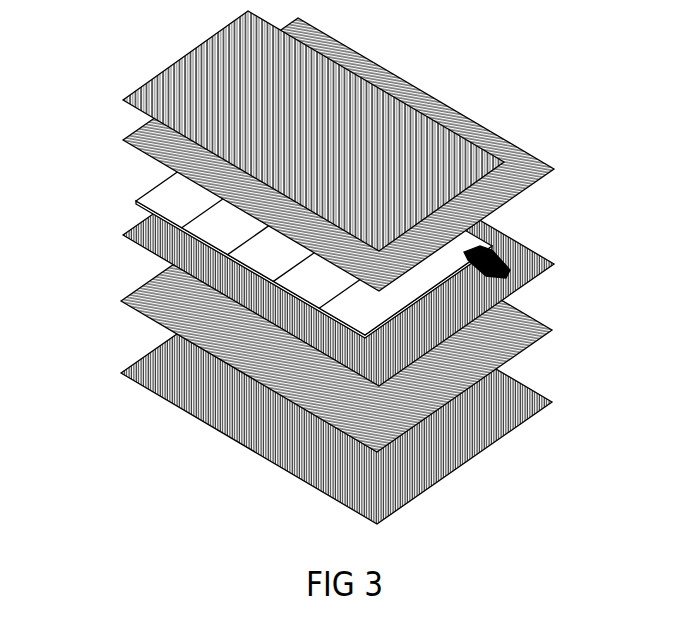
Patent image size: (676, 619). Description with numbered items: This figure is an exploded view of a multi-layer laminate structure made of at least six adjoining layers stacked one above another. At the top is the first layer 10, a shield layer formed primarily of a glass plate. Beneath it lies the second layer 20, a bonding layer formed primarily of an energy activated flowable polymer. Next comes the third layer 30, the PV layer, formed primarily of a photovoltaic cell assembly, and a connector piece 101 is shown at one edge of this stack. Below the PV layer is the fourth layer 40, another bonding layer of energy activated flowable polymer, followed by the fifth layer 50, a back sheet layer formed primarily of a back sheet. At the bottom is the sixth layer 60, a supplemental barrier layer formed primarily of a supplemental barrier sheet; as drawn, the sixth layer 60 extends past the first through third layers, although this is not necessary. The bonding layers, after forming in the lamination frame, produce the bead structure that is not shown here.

The first layer 10 is at (140, 74).
The second layer 20 is at (130, 121).
The third layer 30 is at (143, 187).
The fourth layer 40 is at (140, 218).
The fifth layer 50 is at (133, 277).
The sixth layer 60 is at (135, 357).
The connector piece 101 is at (483, 240).